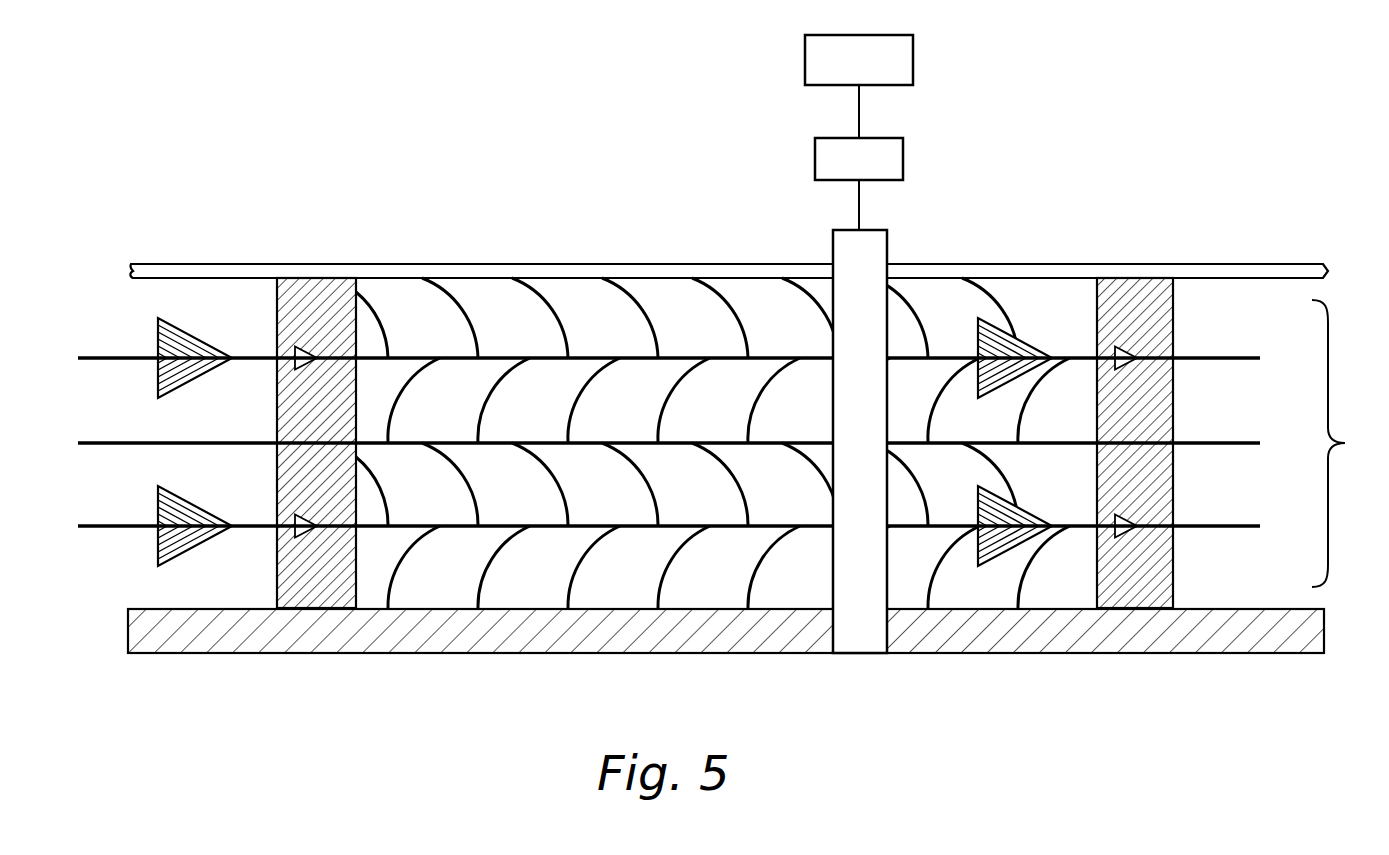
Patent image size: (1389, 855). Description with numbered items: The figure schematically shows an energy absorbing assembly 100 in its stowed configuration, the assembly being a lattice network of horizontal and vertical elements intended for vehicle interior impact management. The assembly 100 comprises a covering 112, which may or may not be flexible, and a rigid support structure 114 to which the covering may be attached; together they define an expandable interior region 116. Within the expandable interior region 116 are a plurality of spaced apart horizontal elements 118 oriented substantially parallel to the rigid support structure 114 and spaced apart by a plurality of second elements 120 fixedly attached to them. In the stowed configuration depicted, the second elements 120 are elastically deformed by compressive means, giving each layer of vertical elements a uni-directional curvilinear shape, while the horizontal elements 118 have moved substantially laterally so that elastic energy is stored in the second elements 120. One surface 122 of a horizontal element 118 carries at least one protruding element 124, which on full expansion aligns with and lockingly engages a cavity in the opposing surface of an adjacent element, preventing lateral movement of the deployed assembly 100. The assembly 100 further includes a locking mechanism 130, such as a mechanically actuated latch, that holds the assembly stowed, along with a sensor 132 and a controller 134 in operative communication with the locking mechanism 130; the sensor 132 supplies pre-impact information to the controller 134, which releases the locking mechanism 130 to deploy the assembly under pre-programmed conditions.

The energy absorbing assembly 100 is at (277, 182).
The covering 112 is at (1210, 264).
The rigid support structure 114 is at (1235, 653).
The expandable interior region 116 is at (1350, 443).
The horizontal elements 118 is at (108, 526).
The second elements 120 is at (576, 563).
The surface of the first element 122 is at (277, 566).
The protruding element 124 is at (160, 543).
The locking mechanism 130 is at (887, 243).
The sensor 132 is at (903, 160).
The controller 134 is at (913, 62).